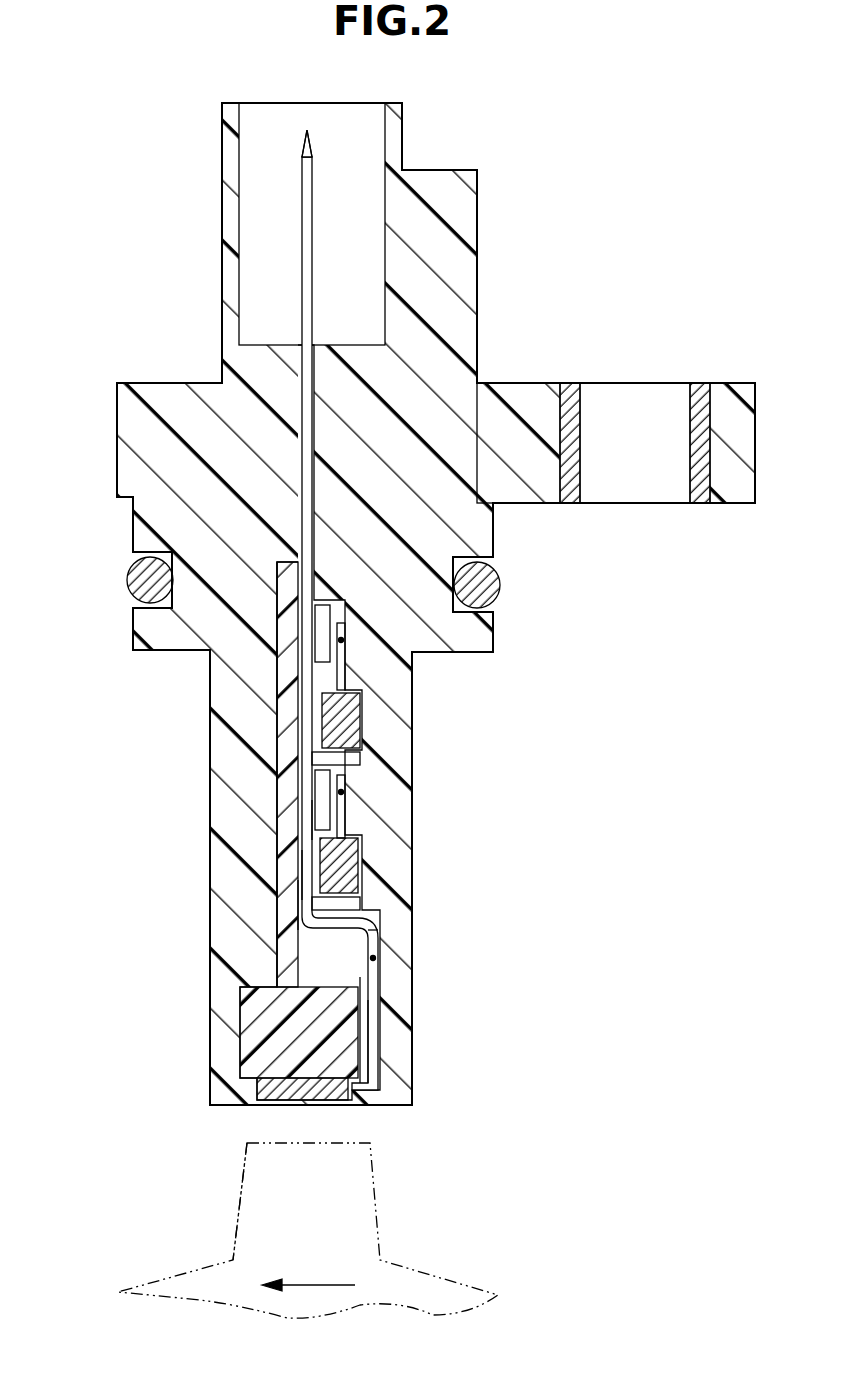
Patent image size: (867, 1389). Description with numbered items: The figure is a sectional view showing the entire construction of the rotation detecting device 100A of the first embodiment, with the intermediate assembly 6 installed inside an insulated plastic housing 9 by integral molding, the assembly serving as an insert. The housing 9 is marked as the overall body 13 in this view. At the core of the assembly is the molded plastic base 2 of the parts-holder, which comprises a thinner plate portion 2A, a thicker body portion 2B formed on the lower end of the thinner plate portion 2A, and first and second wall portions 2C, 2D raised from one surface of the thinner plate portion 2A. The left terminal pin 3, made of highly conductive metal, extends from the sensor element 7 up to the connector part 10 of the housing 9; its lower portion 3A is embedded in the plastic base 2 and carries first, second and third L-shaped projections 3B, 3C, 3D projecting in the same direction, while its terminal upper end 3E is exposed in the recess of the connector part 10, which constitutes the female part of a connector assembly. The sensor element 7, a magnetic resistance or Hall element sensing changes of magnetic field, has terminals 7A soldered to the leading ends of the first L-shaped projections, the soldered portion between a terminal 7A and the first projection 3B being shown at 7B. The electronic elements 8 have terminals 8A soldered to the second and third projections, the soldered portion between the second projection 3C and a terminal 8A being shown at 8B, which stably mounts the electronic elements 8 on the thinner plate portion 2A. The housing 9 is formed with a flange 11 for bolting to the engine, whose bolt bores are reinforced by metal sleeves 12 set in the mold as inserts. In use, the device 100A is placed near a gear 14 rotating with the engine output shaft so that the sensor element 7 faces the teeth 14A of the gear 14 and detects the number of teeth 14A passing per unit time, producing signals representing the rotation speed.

The rotation detecting device 100A is at (687, 131).
The housing 13 is at (137, 370).
The connector part 10 is at (228, 258).
The flange 11 is at (533, 398).
The metal sleeves 12 is at (705, 403).
The housing 9 is at (133, 523).
The terminal pin 3 is at (305, 430).
The terminal upper end 3E is at (305, 190).
The third L-shaped projection 3D is at (500, 585).
The lower portion 3A is at (302, 872).
The first L-shaped projection 3B is at (374, 932).
The second L-shaped projection 3C is at (345, 815).
The plastic base 2 is at (283, 715).
The thinner plate portion 2A is at (282, 912).
The thicker body portion 2B is at (262, 1020).
The first wall portion 2C is at (360, 903).
The second wall portion 2D is at (360, 758).
The intermediate assembly 6 is at (276, 778).
The electronic elements 8 is at (360, 716).
The terminals 8A is at (338, 676).
The soldered portion 8B is at (337, 640).
The sensor element 7 is at (257, 1088).
The terminals 7A is at (378, 1035).
The soldered portion 7B is at (378, 960).
The gear 14 is at (417, 1278).
The teeth 14A is at (253, 1217).